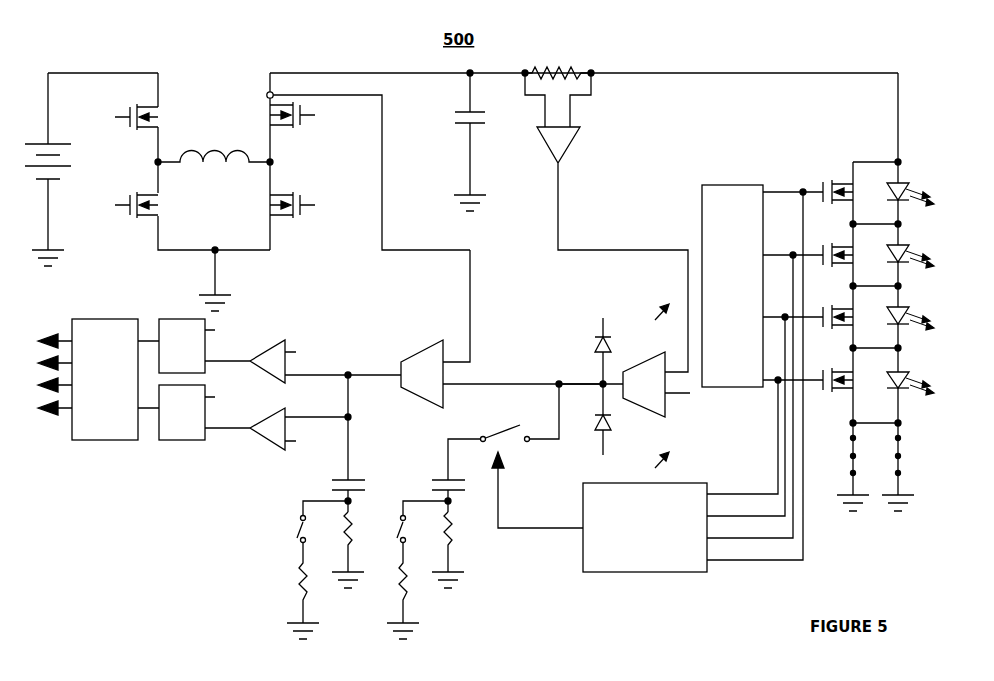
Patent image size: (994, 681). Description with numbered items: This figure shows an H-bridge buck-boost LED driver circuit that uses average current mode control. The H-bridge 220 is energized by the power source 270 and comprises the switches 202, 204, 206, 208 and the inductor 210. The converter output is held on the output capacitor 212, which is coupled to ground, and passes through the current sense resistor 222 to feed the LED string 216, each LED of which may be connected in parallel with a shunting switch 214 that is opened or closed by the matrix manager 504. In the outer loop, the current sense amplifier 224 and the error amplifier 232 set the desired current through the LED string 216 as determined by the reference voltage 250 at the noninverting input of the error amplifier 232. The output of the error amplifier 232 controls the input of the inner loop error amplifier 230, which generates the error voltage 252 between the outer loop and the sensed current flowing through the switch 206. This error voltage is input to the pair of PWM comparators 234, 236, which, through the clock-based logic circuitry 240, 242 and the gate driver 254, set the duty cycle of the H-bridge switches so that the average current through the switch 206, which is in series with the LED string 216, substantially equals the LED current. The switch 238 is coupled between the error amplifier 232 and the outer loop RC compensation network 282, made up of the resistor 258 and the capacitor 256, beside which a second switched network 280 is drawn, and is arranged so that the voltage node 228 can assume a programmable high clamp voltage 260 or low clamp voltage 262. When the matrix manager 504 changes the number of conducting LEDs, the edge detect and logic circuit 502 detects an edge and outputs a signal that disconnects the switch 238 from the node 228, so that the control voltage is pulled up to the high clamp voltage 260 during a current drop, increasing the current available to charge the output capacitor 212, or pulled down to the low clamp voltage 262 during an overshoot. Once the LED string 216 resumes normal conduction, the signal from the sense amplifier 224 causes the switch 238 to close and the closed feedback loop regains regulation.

The switch 202 is at (122, 132).
The switch 204 is at (122, 222).
The switch 206 is at (306, 132).
The switch 208 is at (306, 222).
The inductor 210 is at (218, 150).
The output capacitor 212 is at (460, 132).
The shunting switch 214 is at (833, 178).
The LED string 216 is at (917, 158).
The H-bridge 220 is at (186, 86).
The current sense resistor 222 is at (524, 67).
The current sense amplifier 224 is at (585, 125).
The voltage node 228 is at (512, 365).
The error amplifier 230 is at (420, 343).
The error amplifier 232 is at (660, 408).
The comparator 234 is at (276, 340).
The comparator 236 is at (262, 440).
The switch 238 is at (500, 424).
The clock-based logic circuitry 240 is at (150, 318).
The clock-based logic circuitry 242 is at (150, 440).
The reference voltage 250 is at (722, 402).
The error voltage 252 is at (366, 366).
The gate driver 254 is at (70, 318).
The capacitor 256 is at (430, 482).
The resistor 258 is at (456, 530).
The high clamp voltage 260 is at (596, 332).
The low clamp voltage 262 is at (596, 414).
The power source 270 is at (45, 140).
The switched resistor network 280 is at (476, 600).
The RC compensation network 282 is at (272, 507).
The edge detect and logic circuit 502 is at (645, 575).
The matrix manager 504 is at (730, 182).